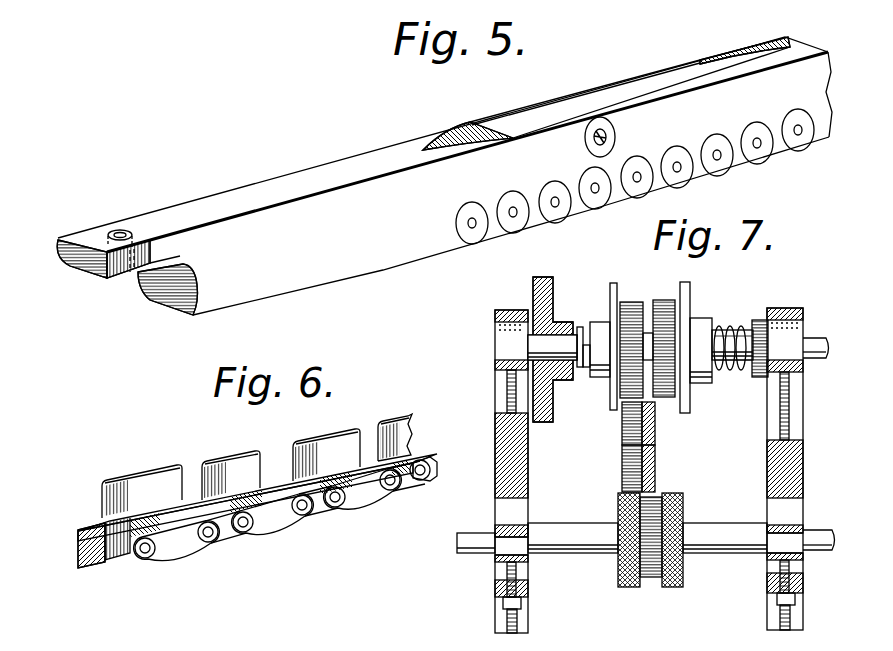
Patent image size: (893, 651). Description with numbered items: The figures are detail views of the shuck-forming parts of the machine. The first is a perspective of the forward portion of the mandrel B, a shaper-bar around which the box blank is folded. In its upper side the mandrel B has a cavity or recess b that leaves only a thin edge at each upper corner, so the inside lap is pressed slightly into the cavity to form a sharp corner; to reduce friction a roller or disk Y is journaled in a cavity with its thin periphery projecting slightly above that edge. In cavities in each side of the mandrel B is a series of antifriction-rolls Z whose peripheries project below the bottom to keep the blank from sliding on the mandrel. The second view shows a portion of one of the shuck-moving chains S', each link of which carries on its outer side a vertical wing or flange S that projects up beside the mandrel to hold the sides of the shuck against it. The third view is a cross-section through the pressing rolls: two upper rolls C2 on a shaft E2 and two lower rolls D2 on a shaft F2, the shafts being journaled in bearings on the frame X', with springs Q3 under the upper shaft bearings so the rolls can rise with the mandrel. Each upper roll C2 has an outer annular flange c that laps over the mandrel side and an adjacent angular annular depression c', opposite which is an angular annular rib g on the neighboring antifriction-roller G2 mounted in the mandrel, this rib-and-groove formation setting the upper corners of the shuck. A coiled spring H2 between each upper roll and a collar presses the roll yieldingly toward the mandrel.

In FIG. 5, the mandrel B is at (343, 236).
In FIG. 5, the cavity or recess b is at (596, 103).
In FIG. 5, the roller or disk Y is at (616, 135).
In FIG. 5, the antifriction-rolls Z is at (478, 243).
In FIG. 6, the vertical wing or flange S is at (257, 473).
In FIG. 6, the shuck-moving chains S' is at (257, 511).
In FIG. 7, the frame X' is at (649, 470).
In FIG. 7, the springs Q3 is at (815, 292).
In FIG. 7, the upper roll-shaft E2 is at (816, 340).
In FIG. 7, the coiled spring H2 is at (742, 304).
In FIG. 7, the annular flange c is at (659, 334).
In FIG. 7, the angular annular depression c' is at (648, 352).
In FIG. 7, the upper rolls C2 is at (663, 305).
In FIG. 7, the angular annular rib g is at (622, 414).
In FIG. 7, the antifriction-roller G2 is at (700, 442).
In FIG. 7, the lower roll-shaft F2 is at (574, 535).
In FIG. 7, the lower rolls D2 is at (632, 588).